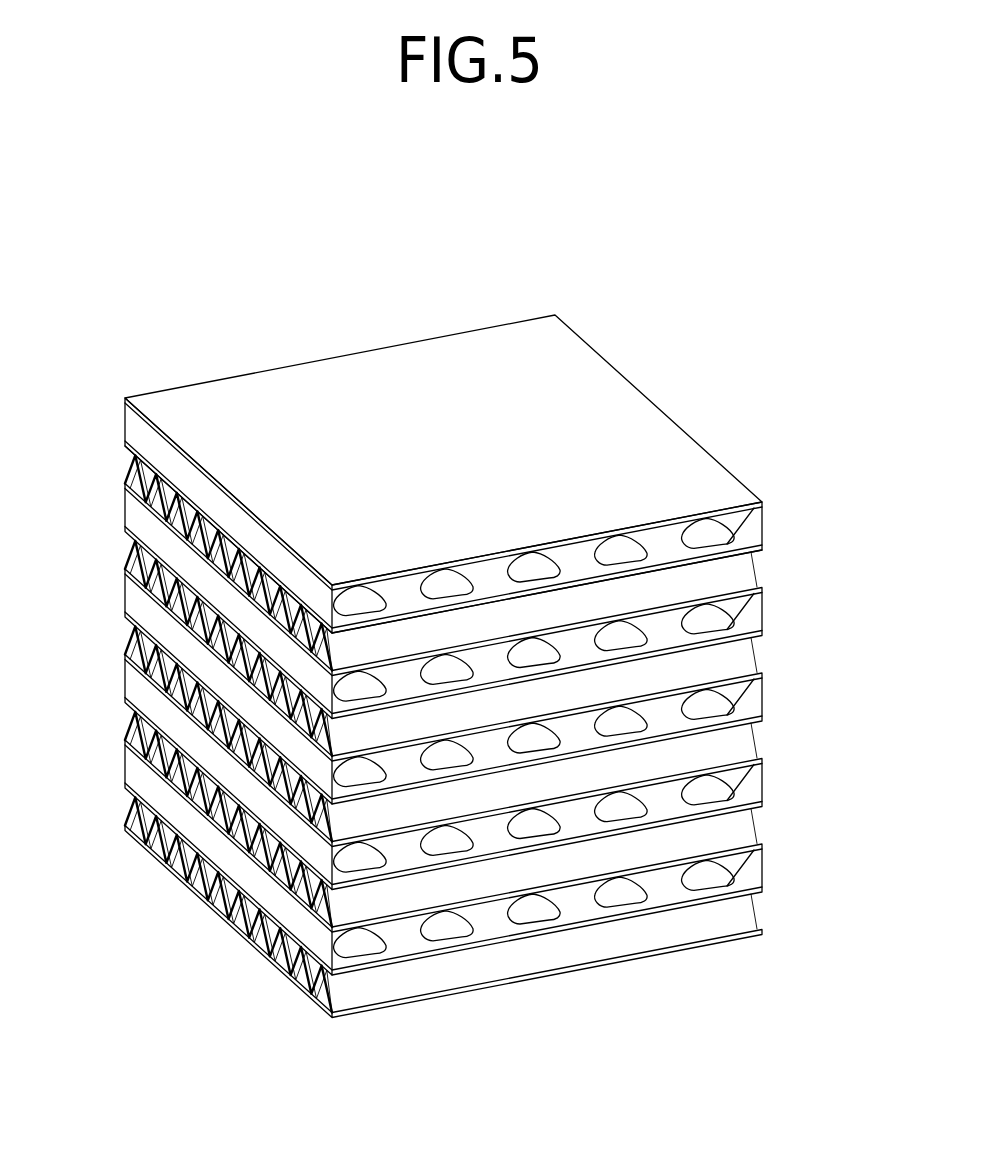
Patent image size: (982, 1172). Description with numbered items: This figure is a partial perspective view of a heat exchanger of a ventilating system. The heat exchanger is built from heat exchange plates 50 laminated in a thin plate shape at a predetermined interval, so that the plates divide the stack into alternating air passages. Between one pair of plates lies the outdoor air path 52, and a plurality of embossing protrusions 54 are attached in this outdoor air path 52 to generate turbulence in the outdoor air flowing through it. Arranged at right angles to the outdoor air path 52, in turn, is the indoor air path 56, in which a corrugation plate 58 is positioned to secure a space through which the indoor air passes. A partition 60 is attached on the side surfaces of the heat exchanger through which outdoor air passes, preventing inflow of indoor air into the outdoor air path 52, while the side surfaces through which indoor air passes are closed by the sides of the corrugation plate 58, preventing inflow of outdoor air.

The heat exchange plate 50 is at (645, 419).
The outdoor air path 52 is at (668, 543).
The embossing protrusion 54 is at (715, 533).
The indoor air path 56 is at (192, 547).
The corrugation plate 58 is at (130, 477).
The partition 60 is at (140, 428).